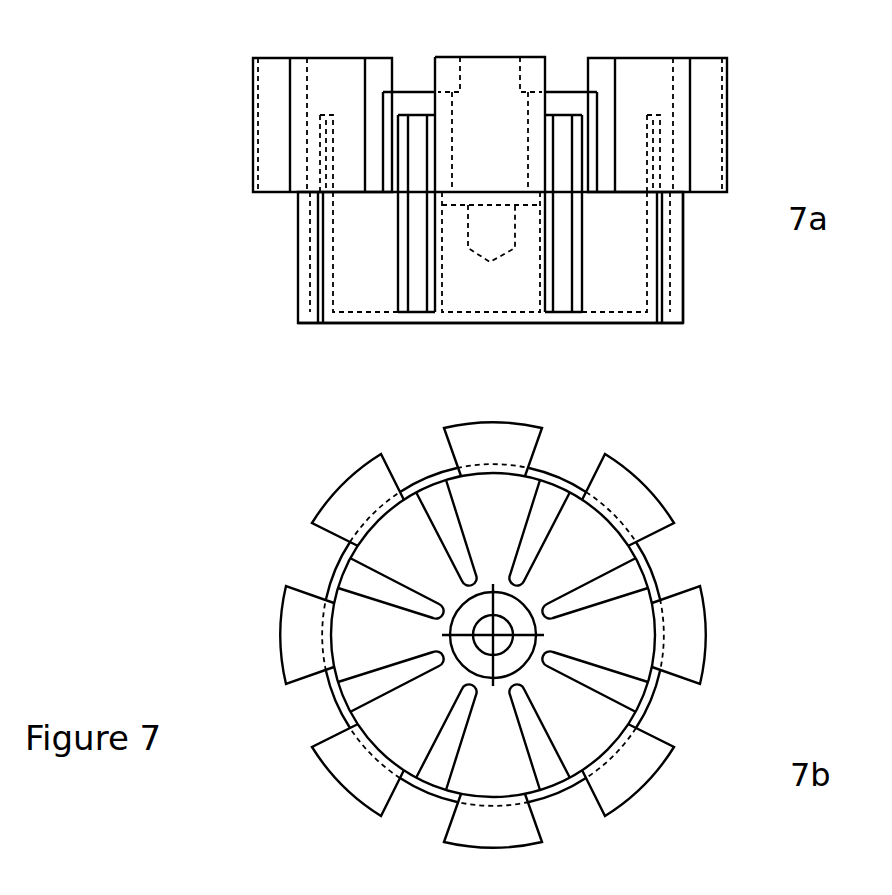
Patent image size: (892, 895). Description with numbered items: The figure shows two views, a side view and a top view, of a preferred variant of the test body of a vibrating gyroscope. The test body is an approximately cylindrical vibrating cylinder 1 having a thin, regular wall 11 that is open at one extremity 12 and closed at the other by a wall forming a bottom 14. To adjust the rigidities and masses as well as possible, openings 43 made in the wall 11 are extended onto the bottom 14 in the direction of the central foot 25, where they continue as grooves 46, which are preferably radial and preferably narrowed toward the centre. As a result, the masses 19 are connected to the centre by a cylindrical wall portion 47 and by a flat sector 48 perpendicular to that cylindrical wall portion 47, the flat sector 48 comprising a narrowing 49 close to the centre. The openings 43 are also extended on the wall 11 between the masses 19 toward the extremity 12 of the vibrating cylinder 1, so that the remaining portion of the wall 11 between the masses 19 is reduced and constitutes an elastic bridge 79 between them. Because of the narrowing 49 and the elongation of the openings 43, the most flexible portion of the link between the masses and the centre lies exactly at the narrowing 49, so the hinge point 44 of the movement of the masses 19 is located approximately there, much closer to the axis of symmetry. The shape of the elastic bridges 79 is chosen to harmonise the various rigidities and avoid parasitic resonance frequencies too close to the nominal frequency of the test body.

The vibrating cylinder 1 is at (683, 255).
The wall 11 is at (358, 210).
The extremity 12 is at (423, 87).
The bottom 14 is at (368, 323).
The masses 19 is at (263, 72).
The foot 25 is at (508, 278).
The openings 43 is at (417, 272).
The hinge point 44 is at (442, 640).
The grooves 46 is at (420, 323).
The cylindrical wall portion 47 is at (318, 257).
The flat sector 48 is at (575, 547).
The narrowing 49 is at (540, 680).
The elastic bridge 79 is at (405, 85).